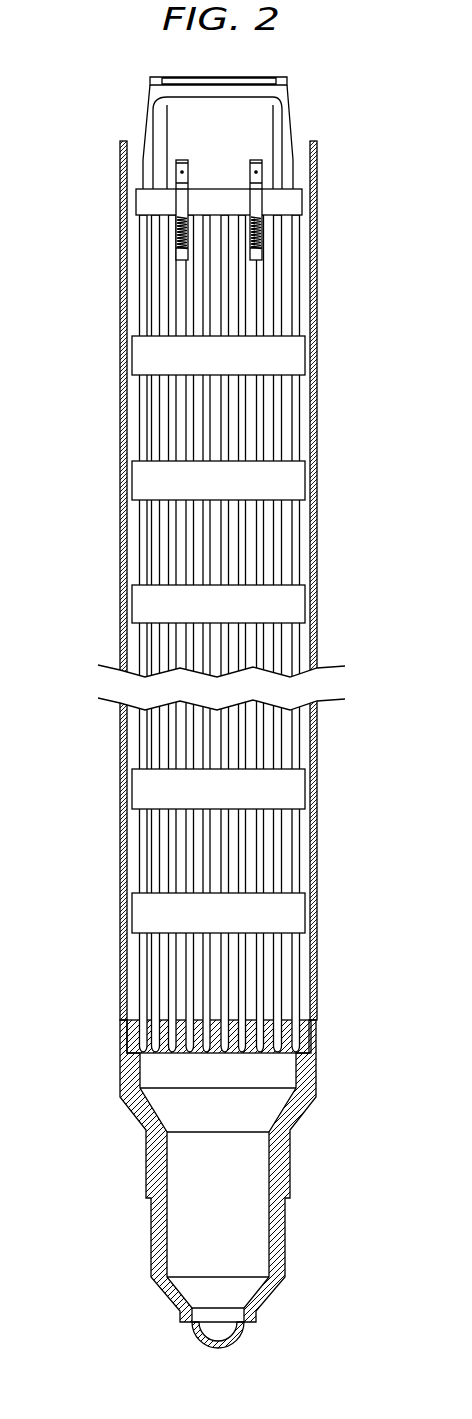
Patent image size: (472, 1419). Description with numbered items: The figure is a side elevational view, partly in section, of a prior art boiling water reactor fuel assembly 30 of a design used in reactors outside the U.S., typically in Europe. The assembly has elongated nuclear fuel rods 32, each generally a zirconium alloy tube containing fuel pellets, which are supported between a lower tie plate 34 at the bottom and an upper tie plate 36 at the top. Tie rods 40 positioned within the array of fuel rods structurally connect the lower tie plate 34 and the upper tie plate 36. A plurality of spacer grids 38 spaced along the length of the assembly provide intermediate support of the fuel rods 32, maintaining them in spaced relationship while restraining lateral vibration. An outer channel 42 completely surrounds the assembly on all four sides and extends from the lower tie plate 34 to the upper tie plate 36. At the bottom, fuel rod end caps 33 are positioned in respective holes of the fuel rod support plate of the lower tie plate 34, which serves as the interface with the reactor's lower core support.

The fuel assembly 30 is at (82, 588).
The fuel rods 32 is at (293, 402).
The fuel rod end caps 33 is at (163, 1053).
The lower tie plate 34 is at (292, 1187).
The upper tie plate 36 is at (143, 200).
The spacer grids 38 is at (142, 352).
The tie rods 40 is at (178, 286).
The outer channel 42 is at (124, 850).